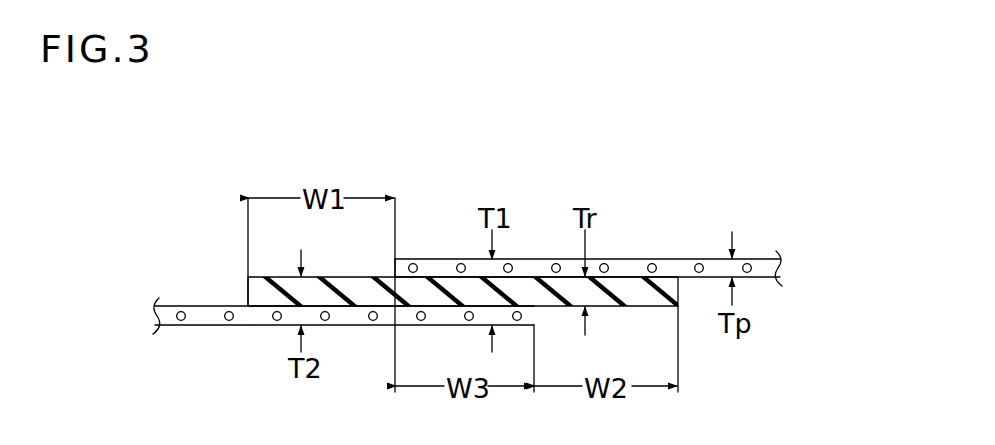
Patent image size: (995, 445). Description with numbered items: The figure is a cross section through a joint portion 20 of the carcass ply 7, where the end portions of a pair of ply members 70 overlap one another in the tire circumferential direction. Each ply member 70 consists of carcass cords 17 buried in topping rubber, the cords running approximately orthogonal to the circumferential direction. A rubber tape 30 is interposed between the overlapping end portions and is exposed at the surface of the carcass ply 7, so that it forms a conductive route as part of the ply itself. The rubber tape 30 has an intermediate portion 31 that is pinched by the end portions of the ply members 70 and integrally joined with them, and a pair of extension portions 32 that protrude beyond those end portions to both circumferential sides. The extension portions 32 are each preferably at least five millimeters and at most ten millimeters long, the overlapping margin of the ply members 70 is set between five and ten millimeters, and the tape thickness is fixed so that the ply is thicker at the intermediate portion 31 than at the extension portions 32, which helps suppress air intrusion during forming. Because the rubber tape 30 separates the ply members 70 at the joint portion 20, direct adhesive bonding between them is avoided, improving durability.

The carcass ply 7 is at (188, 306).
The carcass cords 17 is at (181, 322).
The joint portion 20 is at (541, 214).
The rubber tape 30 is at (248, 283).
The intermediate portion 31 is at (457, 293).
The extension portions 32 is at (357, 292).
The ply member 70 is at (257, 326).